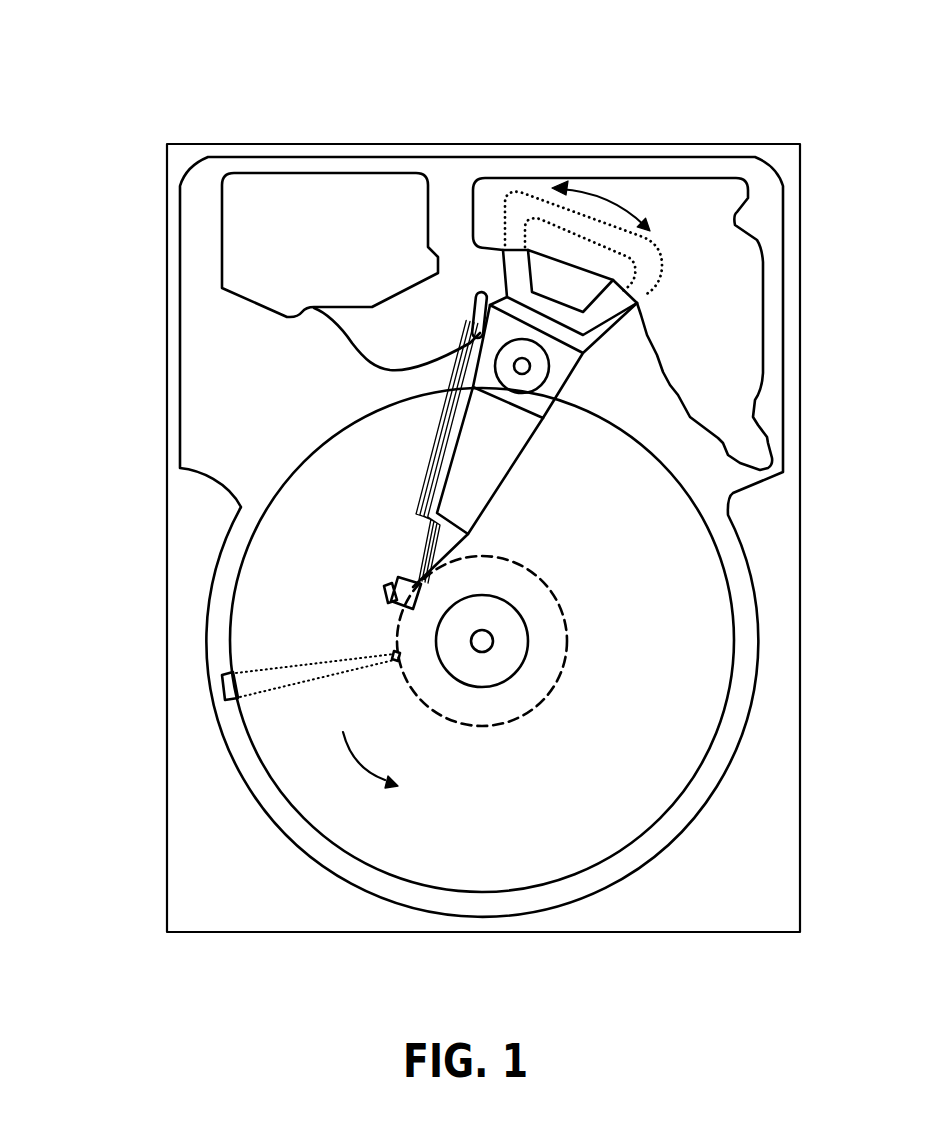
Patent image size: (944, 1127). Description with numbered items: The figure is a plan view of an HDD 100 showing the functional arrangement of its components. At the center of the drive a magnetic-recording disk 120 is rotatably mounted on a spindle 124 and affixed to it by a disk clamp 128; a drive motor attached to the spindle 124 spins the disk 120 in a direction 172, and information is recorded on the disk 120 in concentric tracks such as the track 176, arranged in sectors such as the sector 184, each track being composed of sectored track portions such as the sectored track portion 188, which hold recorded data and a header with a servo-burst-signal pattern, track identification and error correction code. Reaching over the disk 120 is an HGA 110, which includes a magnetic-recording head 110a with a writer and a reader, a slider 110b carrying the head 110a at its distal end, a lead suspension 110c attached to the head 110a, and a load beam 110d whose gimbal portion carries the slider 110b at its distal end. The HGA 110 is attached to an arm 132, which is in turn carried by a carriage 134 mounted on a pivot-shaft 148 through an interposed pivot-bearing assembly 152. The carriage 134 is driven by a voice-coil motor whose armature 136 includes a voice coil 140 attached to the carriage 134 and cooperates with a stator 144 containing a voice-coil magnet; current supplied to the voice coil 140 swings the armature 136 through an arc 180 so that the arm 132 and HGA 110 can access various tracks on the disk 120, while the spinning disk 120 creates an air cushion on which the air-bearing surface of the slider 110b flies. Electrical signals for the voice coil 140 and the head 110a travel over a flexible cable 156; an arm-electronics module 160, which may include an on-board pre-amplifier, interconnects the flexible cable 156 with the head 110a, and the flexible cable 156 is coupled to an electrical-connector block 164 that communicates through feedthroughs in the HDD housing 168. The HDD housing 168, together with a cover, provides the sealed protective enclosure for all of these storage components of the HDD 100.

The HDD 100 is at (138, 84).
The HGA 110 is at (254, 465).
The magnetic-recording head 110a is at (393, 590).
The slider 110b is at (407, 577).
The lead suspension 110c is at (414, 540).
The load beam 110d is at (413, 513).
The magnetic-recording disk 120 is at (667, 592).
The spindle 124 is at (483, 640).
The disk clamp 128 is at (508, 657).
The arm 132 is at (475, 480).
The carriage 134 is at (543, 398).
The armature 136 is at (503, 250).
The voice coil 140 is at (518, 257).
The stator 144 is at (731, 268).
The pivot-shaft 148 is at (523, 364).
The pivot-bearing assembly 152 is at (537, 377).
The flexible cable 156 is at (345, 340).
The arm-electronics module 160 is at (473, 328).
The electrical-connector block 164 is at (243, 243).
The HDD housing 168 is at (782, 156).
The direction 172 is at (397, 756).
The track 176 is at (558, 602).
The arc 180 is at (601, 193).
The sector 184 is at (215, 684).
The sectored track portion 188 is at (395, 652).